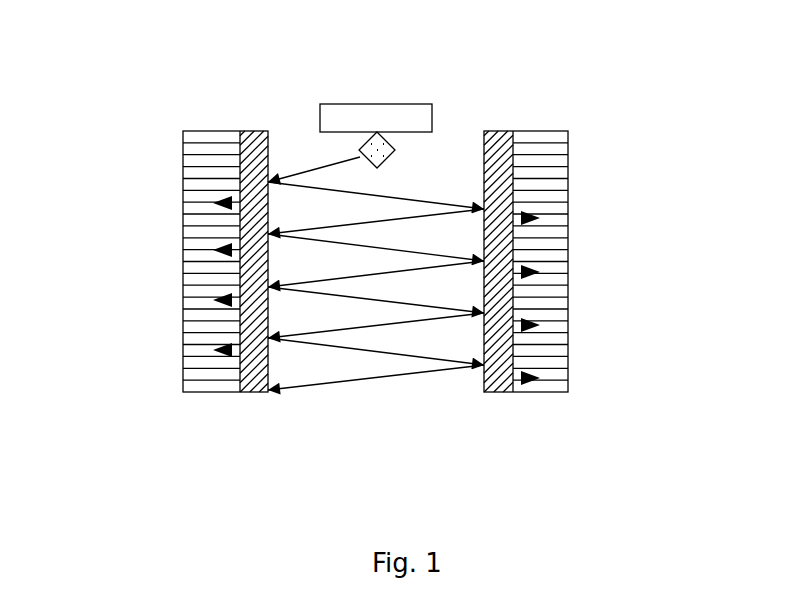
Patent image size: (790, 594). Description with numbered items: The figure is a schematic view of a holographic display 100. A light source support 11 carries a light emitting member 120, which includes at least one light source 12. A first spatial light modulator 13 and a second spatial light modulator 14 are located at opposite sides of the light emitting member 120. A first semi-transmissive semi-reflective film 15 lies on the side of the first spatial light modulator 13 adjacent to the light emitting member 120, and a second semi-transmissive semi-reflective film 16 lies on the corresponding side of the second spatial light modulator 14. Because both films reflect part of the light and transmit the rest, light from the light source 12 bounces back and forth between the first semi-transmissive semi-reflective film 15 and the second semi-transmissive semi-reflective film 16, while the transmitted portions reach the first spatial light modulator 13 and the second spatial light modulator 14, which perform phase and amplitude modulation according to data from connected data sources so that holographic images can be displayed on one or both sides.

The holographic display 100 is at (121, 52).
The light source support 11 is at (349, 104).
The light source 12 is at (397, 150).
The light emitting member 120 is at (360, 150).
The first spatial light modulator 13 is at (239, 306).
The second spatial light modulator 14 is at (536, 306).
The first semi-transmissive semi-reflective film 15 is at (270, 365).
The second semi-transmissive semi-reflective film 16 is at (484, 340).